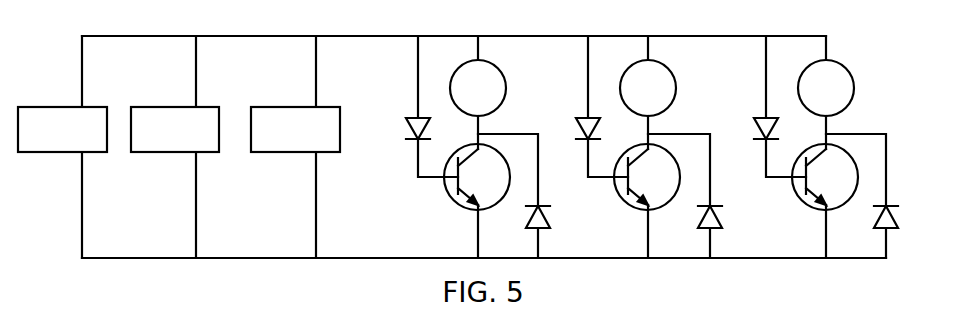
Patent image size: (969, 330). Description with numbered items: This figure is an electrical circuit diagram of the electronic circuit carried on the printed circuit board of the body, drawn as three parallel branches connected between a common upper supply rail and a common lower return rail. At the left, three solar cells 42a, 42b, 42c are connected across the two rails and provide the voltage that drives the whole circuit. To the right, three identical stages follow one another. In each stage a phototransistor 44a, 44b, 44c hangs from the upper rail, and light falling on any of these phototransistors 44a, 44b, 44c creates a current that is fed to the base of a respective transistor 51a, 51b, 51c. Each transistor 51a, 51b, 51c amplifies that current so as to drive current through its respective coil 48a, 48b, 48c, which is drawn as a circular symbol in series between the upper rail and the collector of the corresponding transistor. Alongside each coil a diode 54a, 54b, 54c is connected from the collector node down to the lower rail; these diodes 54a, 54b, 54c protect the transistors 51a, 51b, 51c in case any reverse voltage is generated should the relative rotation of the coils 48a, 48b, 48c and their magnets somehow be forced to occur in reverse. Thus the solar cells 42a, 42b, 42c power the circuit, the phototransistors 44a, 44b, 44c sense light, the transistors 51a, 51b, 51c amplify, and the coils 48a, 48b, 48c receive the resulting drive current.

The solar cell 42a is at (62, 129).
The solar cell 42b is at (175, 129).
The solar cell 42c is at (295, 129).
The phototransistor 44a is at (412, 133).
The phototransistor 44b is at (582, 133).
The phototransistor 44c is at (760, 133).
The coil 48a is at (478, 104).
The coil 48b is at (648, 104).
The coil 48c is at (826, 104).
The transistor 51a is at (451, 201).
The transistor 51b is at (622, 201).
The transistor 51c is at (800, 201).
The diode 54a is at (533, 196).
The diode 54b is at (706, 196).
The diode 54c is at (881, 196).